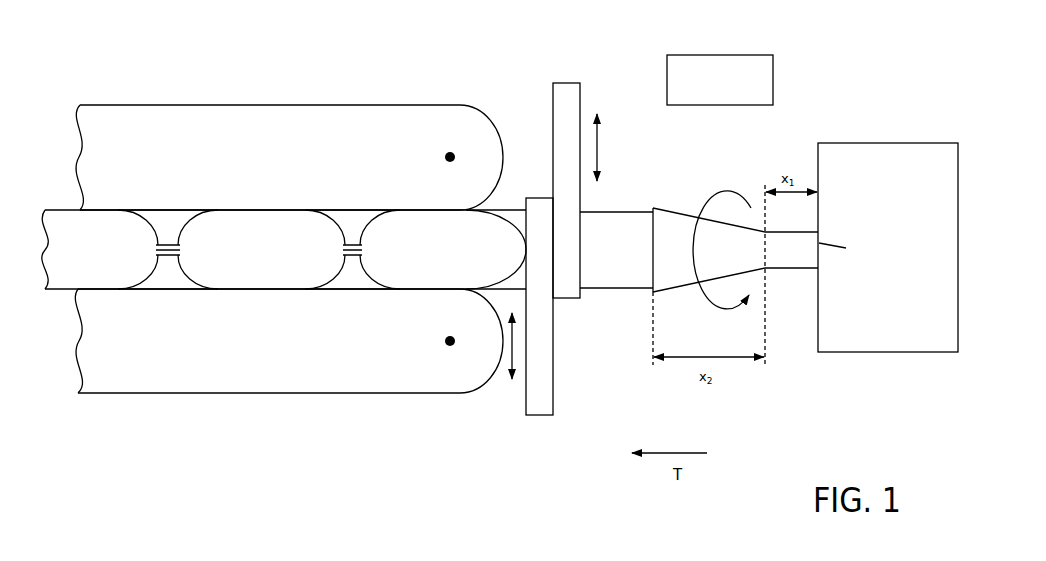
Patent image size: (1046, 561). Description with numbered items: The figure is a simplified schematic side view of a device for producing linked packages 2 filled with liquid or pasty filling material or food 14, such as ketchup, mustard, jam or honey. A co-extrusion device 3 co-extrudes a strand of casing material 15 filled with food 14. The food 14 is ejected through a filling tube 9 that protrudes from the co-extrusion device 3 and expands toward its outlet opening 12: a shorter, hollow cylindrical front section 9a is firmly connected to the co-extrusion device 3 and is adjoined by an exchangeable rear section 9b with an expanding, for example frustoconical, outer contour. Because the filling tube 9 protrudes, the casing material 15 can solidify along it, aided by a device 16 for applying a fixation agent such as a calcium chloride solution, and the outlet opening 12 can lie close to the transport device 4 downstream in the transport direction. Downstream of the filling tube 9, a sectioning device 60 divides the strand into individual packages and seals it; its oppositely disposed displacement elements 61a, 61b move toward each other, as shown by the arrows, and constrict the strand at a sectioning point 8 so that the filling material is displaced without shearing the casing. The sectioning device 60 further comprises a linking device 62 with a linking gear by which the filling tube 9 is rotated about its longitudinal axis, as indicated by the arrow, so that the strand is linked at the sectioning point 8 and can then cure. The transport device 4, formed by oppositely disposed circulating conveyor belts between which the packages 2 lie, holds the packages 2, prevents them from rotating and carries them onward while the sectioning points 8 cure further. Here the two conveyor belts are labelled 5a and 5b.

The linked packages 2 is at (465, 222).
The co-extrusion device 3 is at (847, 140).
The transport device 4 is at (221, 97).
The upper cladding strand 5a is at (330, 104).
The lower cladding strand 5b is at (406, 393).
The sectioning point 8 is at (352, 257).
The filling tube 9 is at (664, 205).
The front section 9a is at (797, 269).
The rear section 9b is at (697, 281).
The outlet opening 12 is at (640, 210).
The food 14 is at (598, 290).
The casing material 15 is at (640, 290).
The device for applying a fixation agent 16 is at (733, 96).
The sectioning device 60 is at (541, 67).
The displacement element 61a is at (566, 82).
The displacement element 61b is at (540, 416).
The linking device 62 is at (845, 248).